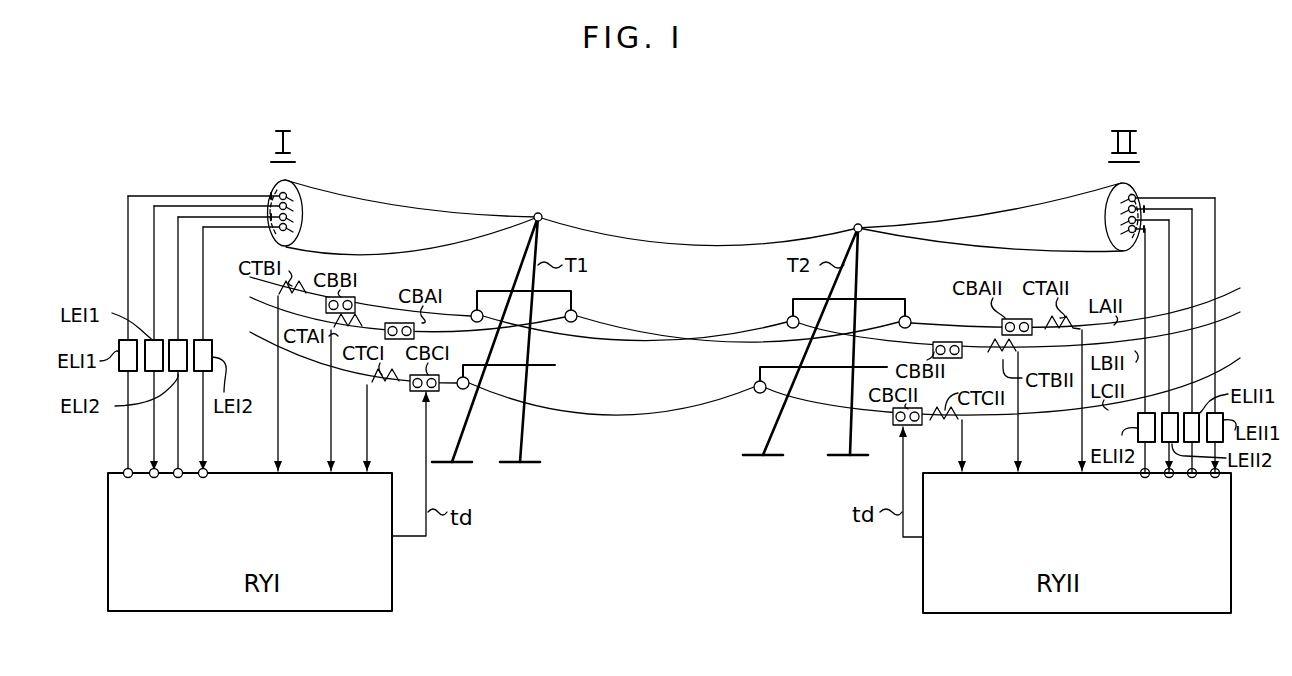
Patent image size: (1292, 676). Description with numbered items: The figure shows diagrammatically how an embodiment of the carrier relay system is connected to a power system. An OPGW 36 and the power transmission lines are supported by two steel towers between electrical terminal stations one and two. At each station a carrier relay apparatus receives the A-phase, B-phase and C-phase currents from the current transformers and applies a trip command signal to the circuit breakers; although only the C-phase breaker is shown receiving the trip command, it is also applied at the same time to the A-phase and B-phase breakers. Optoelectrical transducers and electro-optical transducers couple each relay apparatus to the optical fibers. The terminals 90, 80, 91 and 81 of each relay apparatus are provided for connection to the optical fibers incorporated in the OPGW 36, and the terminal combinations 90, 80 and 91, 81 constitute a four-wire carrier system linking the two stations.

The OPGW 36 is at (404, 208).
The terminal 80 is at (154, 478).
The terminal 81 is at (203, 478).
The terminal 90 is at (128, 478).
The terminal 91 is at (178, 478).